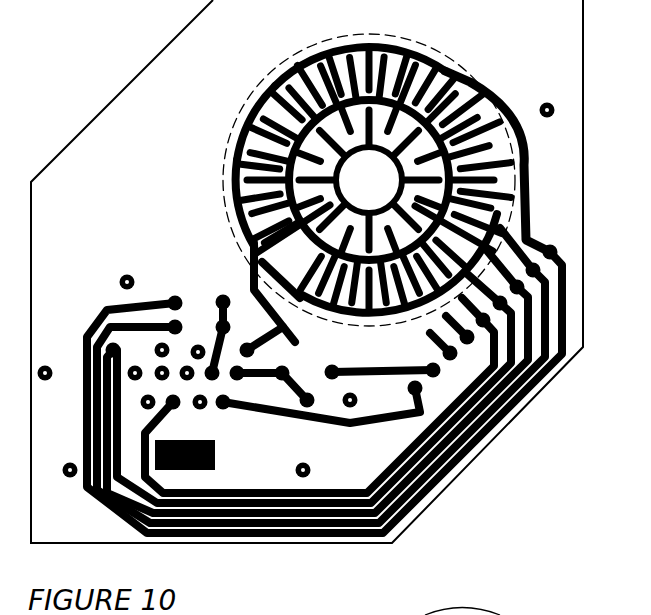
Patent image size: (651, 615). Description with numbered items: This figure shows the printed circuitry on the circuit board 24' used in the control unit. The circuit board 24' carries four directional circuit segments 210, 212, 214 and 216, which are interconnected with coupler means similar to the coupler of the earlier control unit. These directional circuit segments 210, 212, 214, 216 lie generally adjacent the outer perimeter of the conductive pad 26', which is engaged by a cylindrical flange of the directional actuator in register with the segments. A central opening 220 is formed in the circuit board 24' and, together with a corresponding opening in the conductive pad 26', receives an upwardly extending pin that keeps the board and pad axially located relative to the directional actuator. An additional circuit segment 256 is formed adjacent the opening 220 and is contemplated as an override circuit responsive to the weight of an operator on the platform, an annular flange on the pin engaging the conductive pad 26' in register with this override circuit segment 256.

The directional circuit segment 210 is at (292, 50).
The additional circuit segment 256 is at (288, 98).
The circuit board 24' is at (307, 271).
The directional circuit segment 212 is at (232, 238).
The directional circuit segment 214 is at (255, 277).
The central opening 220 is at (352, 166).
The directional circuit segment 216 is at (512, 160).
The conductive pad 26' is at (371, 172).